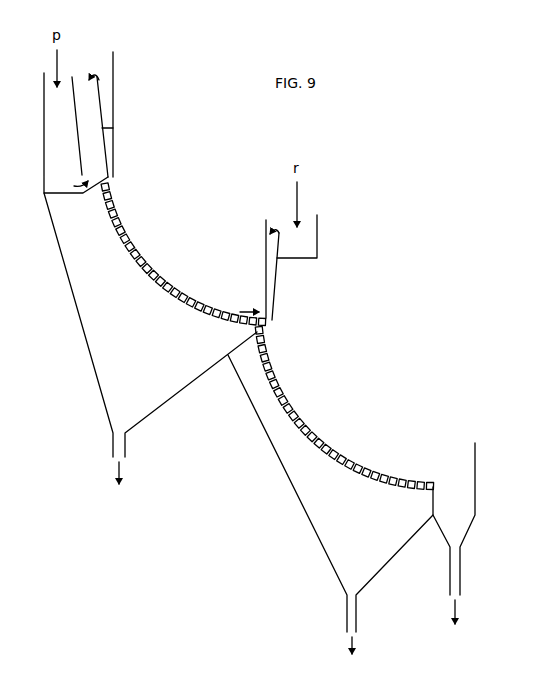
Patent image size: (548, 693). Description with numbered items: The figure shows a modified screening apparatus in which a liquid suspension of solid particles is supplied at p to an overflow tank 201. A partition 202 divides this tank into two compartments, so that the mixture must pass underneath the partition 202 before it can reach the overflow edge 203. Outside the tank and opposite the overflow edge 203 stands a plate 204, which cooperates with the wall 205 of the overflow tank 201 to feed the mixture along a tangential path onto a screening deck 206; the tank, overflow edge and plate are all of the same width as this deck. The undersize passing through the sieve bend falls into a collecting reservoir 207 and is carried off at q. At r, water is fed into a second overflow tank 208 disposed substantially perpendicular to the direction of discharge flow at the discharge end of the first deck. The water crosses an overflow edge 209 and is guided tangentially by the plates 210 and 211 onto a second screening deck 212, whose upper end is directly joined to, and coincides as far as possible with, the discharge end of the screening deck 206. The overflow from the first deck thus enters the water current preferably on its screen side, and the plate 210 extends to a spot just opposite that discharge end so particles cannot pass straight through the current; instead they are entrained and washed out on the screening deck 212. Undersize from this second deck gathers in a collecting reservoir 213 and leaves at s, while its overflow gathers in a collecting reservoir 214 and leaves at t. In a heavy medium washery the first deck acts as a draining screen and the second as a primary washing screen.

The overflow tank 201 is at (76, 133).
The partition 202 is at (72, 77).
The overflow edge 203 is at (99, 80).
The plate 204 is at (113, 67).
The wall 205 is at (113, 128).
The screening deck 206 is at (147, 267).
The collecting reservoir 207 is at (103, 387).
The overflow tank 208 is at (318, 233).
The overflow edge 209 is at (293, 243).
The plate 210 is at (277, 286).
The plate 211 is at (266, 223).
The second screening deck 212 is at (297, 415).
The collecting reservoir 213 is at (327, 558).
The collecting reservoir 214 is at (435, 500).